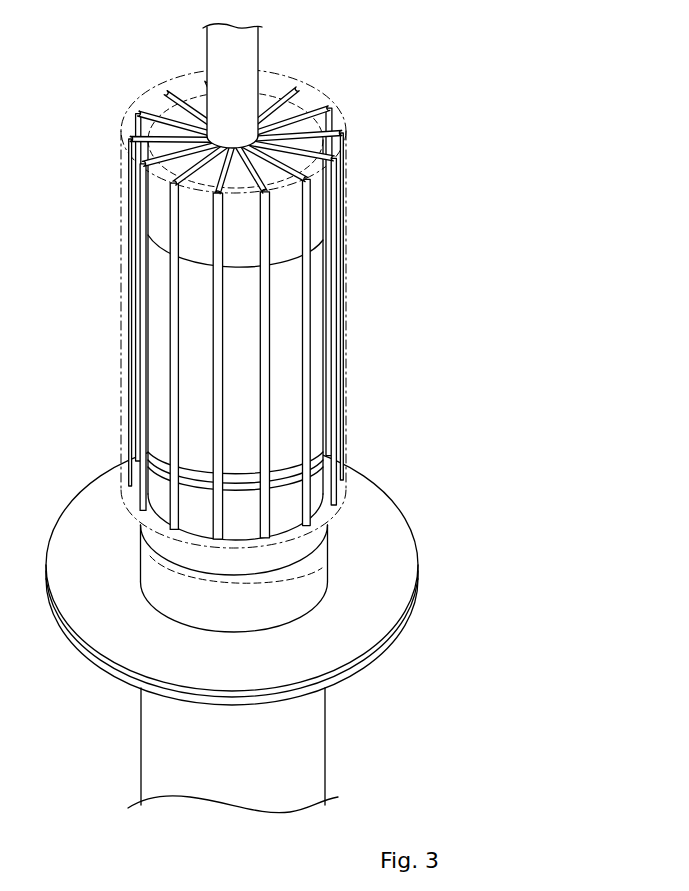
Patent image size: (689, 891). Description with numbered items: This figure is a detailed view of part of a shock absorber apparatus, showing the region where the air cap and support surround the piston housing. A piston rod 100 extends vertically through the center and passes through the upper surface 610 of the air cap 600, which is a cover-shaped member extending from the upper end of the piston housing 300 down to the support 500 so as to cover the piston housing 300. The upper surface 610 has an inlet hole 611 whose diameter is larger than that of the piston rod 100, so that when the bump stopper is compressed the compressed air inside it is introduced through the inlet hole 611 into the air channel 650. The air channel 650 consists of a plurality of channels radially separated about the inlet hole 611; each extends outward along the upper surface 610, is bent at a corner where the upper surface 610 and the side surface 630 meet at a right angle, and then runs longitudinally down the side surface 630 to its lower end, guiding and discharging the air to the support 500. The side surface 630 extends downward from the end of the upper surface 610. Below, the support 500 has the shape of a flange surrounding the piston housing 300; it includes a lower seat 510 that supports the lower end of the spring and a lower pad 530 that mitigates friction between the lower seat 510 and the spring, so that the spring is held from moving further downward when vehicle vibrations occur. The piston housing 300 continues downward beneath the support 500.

The piston rod 100 is at (222, 44).
The piston housing 300 is at (315, 760).
The support 500 is at (323, 572).
The lower seat 510 is at (392, 655).
The lower pad 530 is at (398, 592).
The air cap 600 is at (271, 276).
The upper surface 610 is at (310, 92).
The inlet hole 611 is at (135, 120).
The side surface 630 is at (290, 280).
The air channel 650 is at (177, 318).